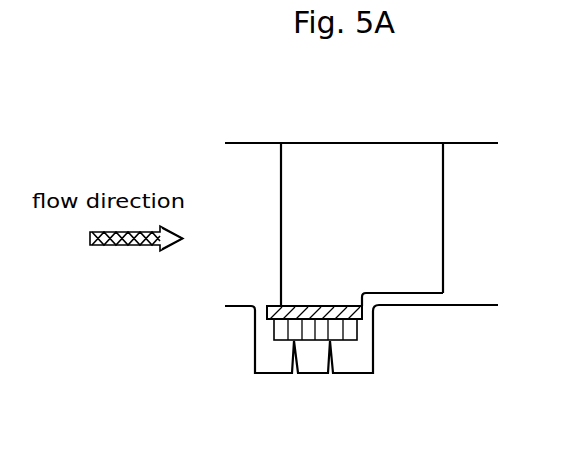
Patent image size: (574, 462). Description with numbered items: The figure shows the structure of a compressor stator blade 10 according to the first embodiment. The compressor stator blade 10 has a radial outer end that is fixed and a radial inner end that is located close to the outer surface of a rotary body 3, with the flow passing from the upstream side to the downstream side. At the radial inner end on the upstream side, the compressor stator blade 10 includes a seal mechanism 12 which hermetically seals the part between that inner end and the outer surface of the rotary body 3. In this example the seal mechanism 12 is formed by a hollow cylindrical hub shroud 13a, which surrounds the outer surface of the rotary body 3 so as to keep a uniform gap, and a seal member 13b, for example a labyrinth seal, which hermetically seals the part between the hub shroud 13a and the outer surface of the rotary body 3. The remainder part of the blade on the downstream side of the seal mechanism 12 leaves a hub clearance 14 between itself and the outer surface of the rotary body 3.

The compressor stator blade 10 is at (297, 219).
The hub clearance 14 is at (422, 300).
The rotary body 3 is at (260, 375).
The seal mechanism 12 is at (347, 355).
The hub shroud 13a is at (275, 306).
The seal member 13b is at (278, 344).